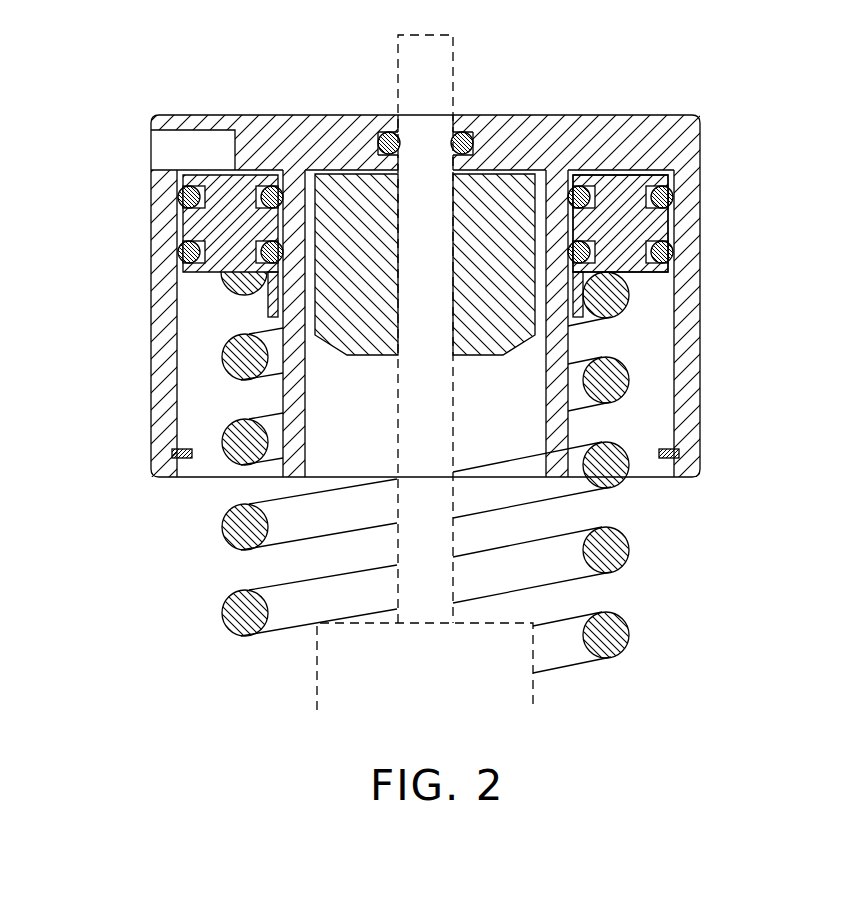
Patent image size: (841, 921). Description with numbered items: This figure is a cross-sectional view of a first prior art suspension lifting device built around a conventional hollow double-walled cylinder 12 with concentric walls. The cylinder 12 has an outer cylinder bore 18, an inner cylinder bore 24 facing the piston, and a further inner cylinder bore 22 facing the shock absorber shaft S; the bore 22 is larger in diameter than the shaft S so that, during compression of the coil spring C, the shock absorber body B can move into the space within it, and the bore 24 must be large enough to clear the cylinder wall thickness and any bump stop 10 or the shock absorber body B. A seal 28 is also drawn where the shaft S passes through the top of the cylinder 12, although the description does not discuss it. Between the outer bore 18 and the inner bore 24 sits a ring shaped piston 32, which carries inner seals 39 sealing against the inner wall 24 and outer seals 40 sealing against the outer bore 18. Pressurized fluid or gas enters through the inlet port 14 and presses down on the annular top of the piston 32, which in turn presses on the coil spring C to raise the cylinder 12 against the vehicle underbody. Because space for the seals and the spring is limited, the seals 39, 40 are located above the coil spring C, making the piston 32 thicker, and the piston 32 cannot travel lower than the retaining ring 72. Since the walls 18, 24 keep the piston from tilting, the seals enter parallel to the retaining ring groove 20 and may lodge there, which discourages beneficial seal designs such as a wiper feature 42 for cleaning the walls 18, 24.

The bump stop 10 is at (485, 356).
The cylinder 12 is at (283, 137).
The inlet port 14 is at (170, 145).
The outer cylinder bore (wall) 18 is at (178, 334).
The retaining ring groove 20 is at (684, 454).
The inner cylinder bore (wall) facing the shock absorber shaft 22 is at (305, 400).
The inner cylinder bore (wall) facing the piston 24 is at (283, 381).
The shaft seal o-ring 28 is at (462, 143).
The ring shaped piston 32 is at (642, 187).
The inner piston seals 39 is at (579, 252).
The outer piston seals 40 is at (662, 251).
The wiper feature 42 is at (583, 172).
The retaining ring 72 is at (182, 455).
The shock absorber shaft S is at (440, 62).
The shock absorber body B is at (534, 681).
The coil spring C is at (606, 380).